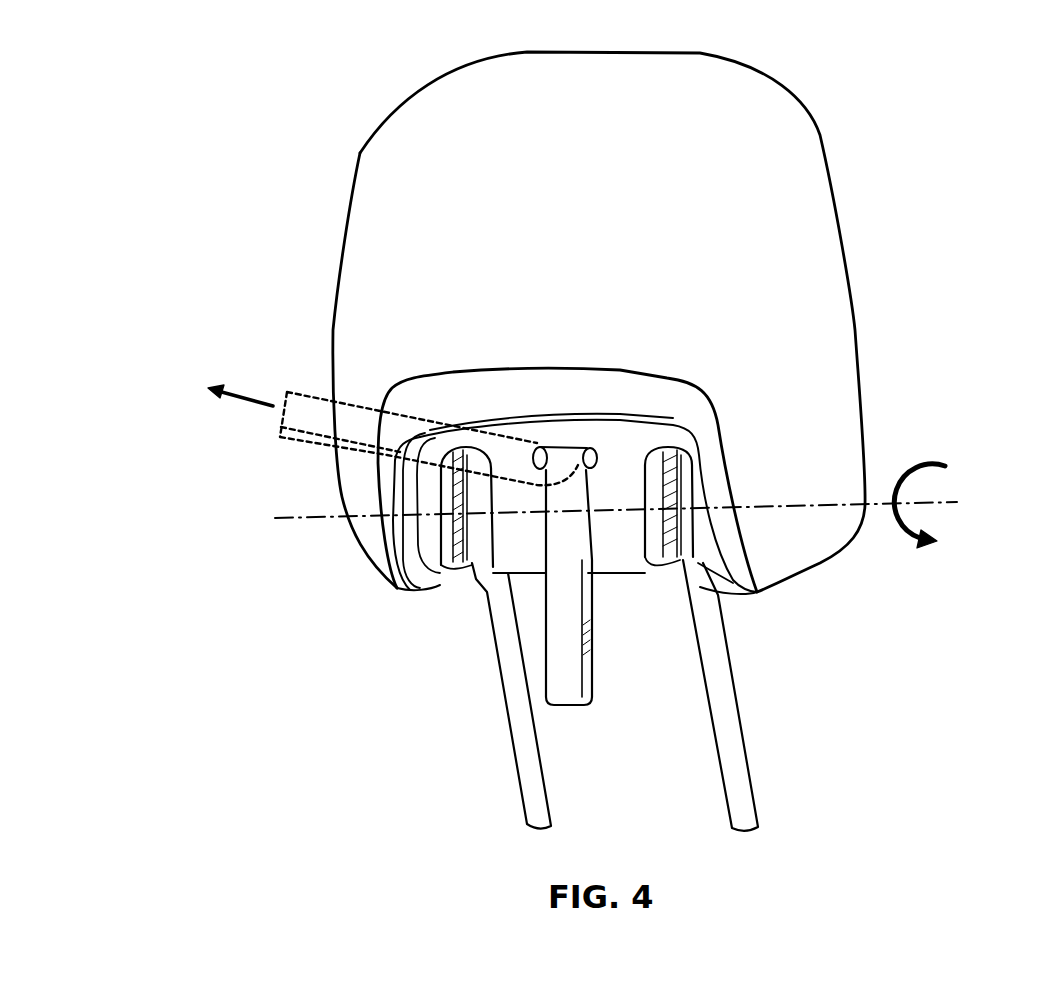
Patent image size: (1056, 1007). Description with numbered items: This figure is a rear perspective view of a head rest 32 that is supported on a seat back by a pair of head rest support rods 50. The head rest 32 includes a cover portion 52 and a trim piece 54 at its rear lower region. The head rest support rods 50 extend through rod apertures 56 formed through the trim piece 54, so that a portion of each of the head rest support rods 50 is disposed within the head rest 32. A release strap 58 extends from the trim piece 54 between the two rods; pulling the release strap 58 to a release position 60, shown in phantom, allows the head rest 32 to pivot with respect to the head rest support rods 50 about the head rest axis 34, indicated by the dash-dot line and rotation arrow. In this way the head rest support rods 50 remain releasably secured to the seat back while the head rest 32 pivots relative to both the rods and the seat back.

The head rest 32 is at (350, 140).
The head rest axis 34 is at (943, 502).
The head rest support rods 50 is at (550, 795).
The cover portion 52 is at (810, 140).
The trim piece 54 is at (684, 374).
The rod apertures 56 is at (443, 537).
The release strap 58 is at (593, 672).
The release position 60 is at (277, 428).